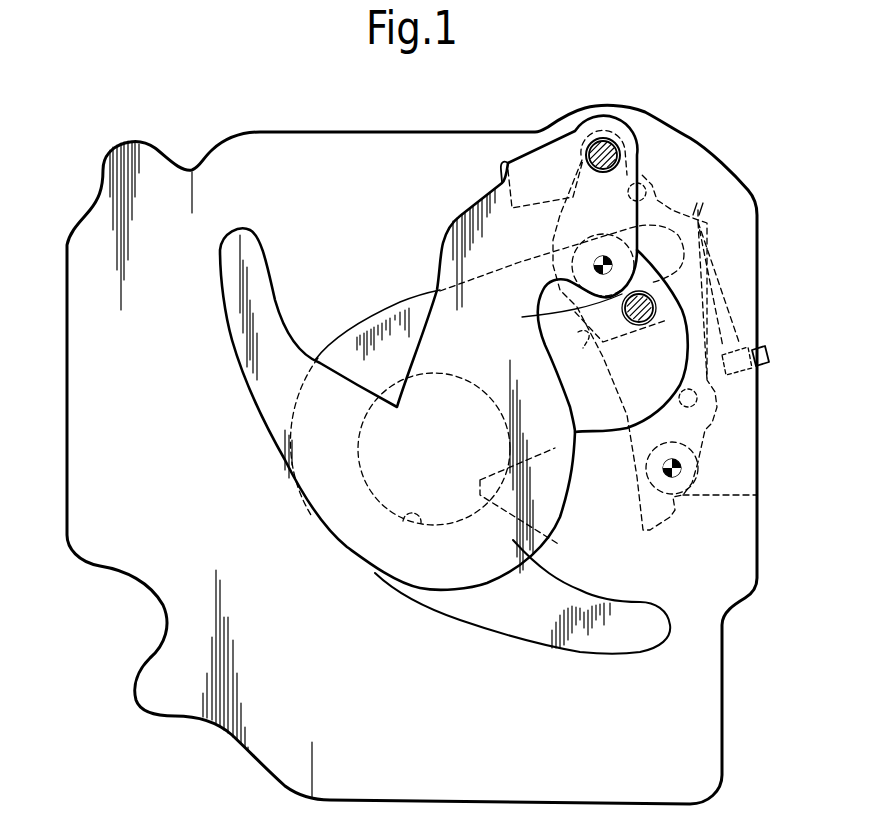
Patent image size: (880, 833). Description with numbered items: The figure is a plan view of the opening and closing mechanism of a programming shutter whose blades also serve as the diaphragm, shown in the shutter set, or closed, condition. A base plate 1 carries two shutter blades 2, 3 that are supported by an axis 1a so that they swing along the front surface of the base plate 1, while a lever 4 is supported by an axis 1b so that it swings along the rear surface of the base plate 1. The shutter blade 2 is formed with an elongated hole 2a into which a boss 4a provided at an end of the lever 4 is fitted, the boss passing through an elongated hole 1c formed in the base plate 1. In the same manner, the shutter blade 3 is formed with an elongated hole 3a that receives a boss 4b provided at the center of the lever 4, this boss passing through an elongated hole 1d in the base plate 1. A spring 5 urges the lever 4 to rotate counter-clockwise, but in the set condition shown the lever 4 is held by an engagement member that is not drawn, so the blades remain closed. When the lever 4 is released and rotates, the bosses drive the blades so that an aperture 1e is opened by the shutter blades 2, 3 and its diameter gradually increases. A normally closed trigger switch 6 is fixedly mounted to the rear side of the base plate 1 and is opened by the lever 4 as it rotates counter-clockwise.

The base plate 1 is at (724, 688).
The axis 1a is at (599, 262).
The axis 1b is at (664, 470).
The elongated hole 1c is at (506, 162).
The elongated hole 1d is at (584, 346).
The aperture 1e is at (424, 525).
The shutter blade 2 is at (546, 546).
The elongated hole 2a is at (605, 172).
The shutter blade 3 is at (530, 648).
The elongated hole 3a is at (526, 317).
The lever 4 is at (672, 512).
The boss 4a is at (622, 150).
The boss 4b is at (646, 326).
The spring 5 is at (724, 494).
The trigger switch 6 is at (723, 270).